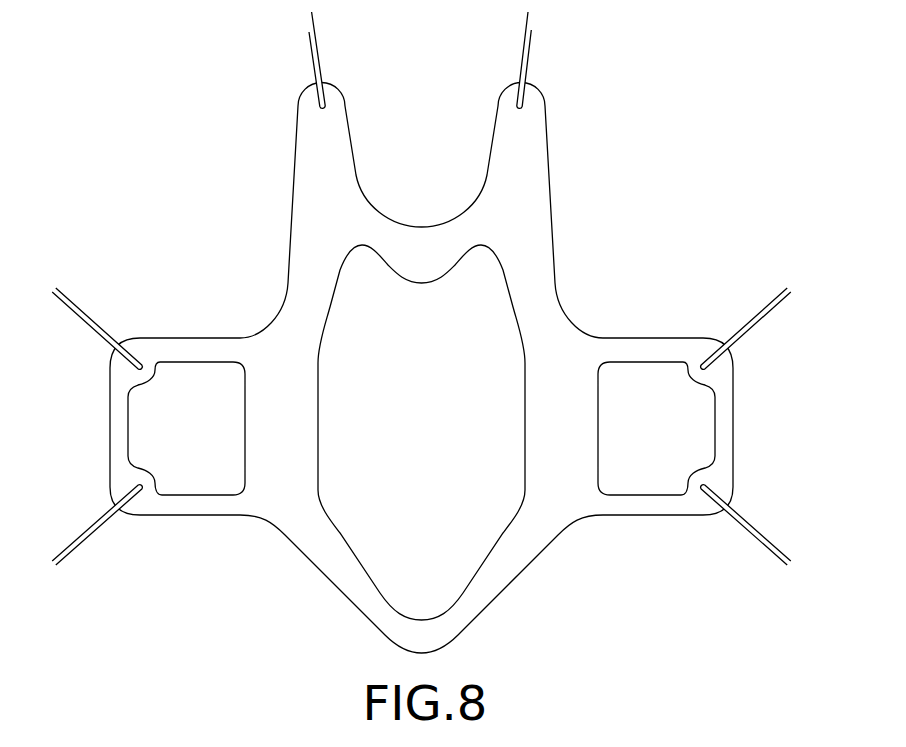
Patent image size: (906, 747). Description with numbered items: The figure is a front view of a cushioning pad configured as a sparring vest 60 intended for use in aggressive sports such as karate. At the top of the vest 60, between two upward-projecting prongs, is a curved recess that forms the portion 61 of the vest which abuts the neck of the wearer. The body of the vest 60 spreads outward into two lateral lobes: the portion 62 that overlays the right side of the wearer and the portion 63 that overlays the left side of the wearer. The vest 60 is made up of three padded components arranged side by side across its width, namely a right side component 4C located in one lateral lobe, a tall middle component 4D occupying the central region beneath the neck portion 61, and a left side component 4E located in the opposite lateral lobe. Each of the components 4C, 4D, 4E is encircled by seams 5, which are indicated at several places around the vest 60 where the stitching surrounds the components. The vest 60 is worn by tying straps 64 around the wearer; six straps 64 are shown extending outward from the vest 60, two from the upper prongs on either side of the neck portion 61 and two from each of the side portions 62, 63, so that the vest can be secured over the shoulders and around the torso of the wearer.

The vest 60 is at (428, 332).
The neck portion of the vest 61 is at (418, 172).
The right side portion of the vest 62 is at (127, 428).
The left side portion of the vest 63 is at (722, 428).
The straps 64 is at (316, 63).
The seams 5 is at (334, 220).
The right side component 4C is at (197, 439).
The middle component 4D is at (438, 439).
The left side component 4E is at (672, 439).